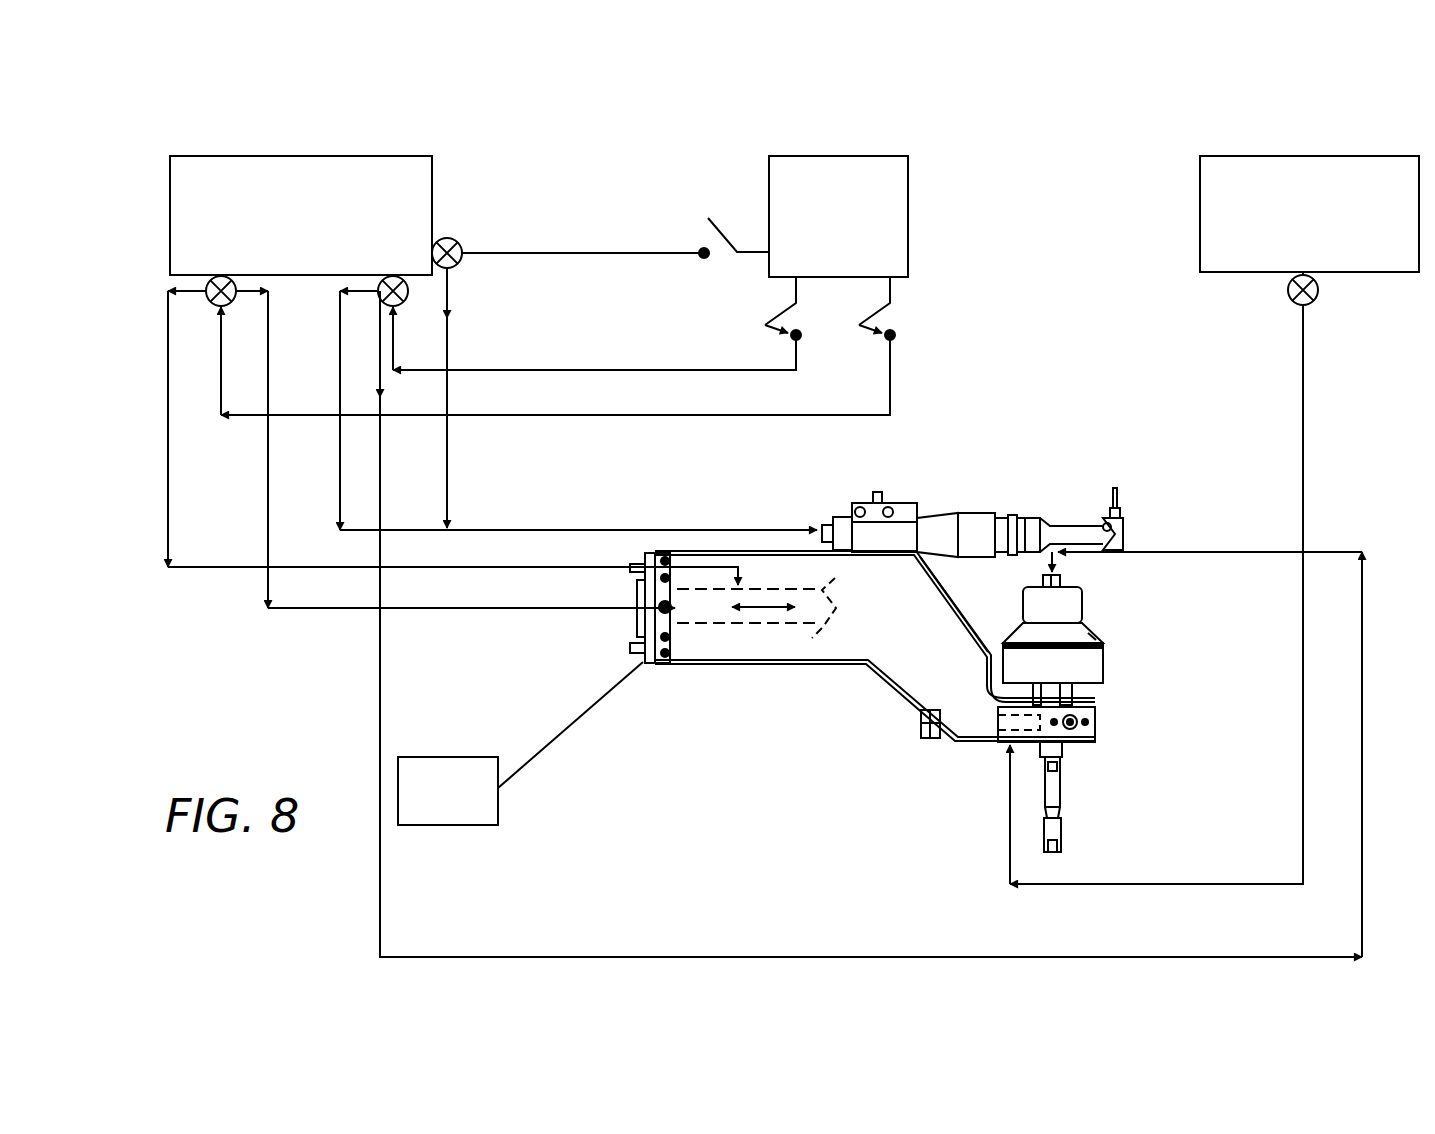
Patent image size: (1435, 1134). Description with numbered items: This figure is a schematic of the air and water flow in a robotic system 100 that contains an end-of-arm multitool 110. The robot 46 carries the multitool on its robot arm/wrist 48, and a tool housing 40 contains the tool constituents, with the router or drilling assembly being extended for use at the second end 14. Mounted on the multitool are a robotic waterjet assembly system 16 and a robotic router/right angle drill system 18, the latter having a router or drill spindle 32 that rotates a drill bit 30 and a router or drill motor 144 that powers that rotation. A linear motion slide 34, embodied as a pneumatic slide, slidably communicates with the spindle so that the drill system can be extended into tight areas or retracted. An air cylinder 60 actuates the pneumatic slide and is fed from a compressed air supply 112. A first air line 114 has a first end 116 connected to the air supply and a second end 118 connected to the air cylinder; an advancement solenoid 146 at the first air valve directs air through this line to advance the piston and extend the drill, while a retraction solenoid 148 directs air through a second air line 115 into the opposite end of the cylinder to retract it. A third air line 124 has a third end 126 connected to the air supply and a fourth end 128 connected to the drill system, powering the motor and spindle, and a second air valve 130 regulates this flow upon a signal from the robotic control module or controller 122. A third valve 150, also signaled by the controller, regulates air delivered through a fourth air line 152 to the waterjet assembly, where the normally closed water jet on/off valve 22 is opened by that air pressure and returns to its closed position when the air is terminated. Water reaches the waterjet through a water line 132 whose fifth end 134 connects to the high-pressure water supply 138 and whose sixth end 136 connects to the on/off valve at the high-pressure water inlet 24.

The second end 14 is at (1125, 683).
The robotic waterjet assembly system 16 is at (1115, 748).
The robotic router/right angle drill system 18 is at (1065, 512).
The water jet on/off valve 22 is at (1105, 640).
The high-pressure water inlet 24 is at (999, 722).
The drill bit 30 is at (1112, 492).
The router or drill spindle 32 is at (960, 505).
The linear motion slide 34 is at (683, 642).
The tool housing 40 is at (856, 644).
The robot 46 is at (437, 828).
The robot arm/wrist 48 is at (562, 740).
The air cylinder 60 is at (787, 643).
The robotic system 100 is at (663, 190).
The end-of-arm multitool 110 is at (890, 700).
The compressed air supply 112 is at (357, 150).
The first air line 114 is at (254, 433).
The second air line 115 is at (160, 462).
The first end 116 is at (287, 298).
The second end 118 is at (645, 618).
The robotic control module or controller 122 is at (850, 150).
The third air line 124 is at (455, 328).
The third end 126 is at (229, 280).
The fourth end 128 is at (807, 524).
The second air valve 130 is at (456, 242).
The water line 132 is at (1305, 410).
The fifth end 134 is at (1285, 312).
The sixth end 136 is at (973, 726).
The high-pressure water supply 138 is at (1280, 150).
The router or drill motor 144 is at (878, 502).
The advancement solenoid 146 is at (248, 290).
The retraction solenoid 148 is at (160, 290).
The third valve 150 is at (402, 300).
The fourth air line 152 is at (1338, 545).